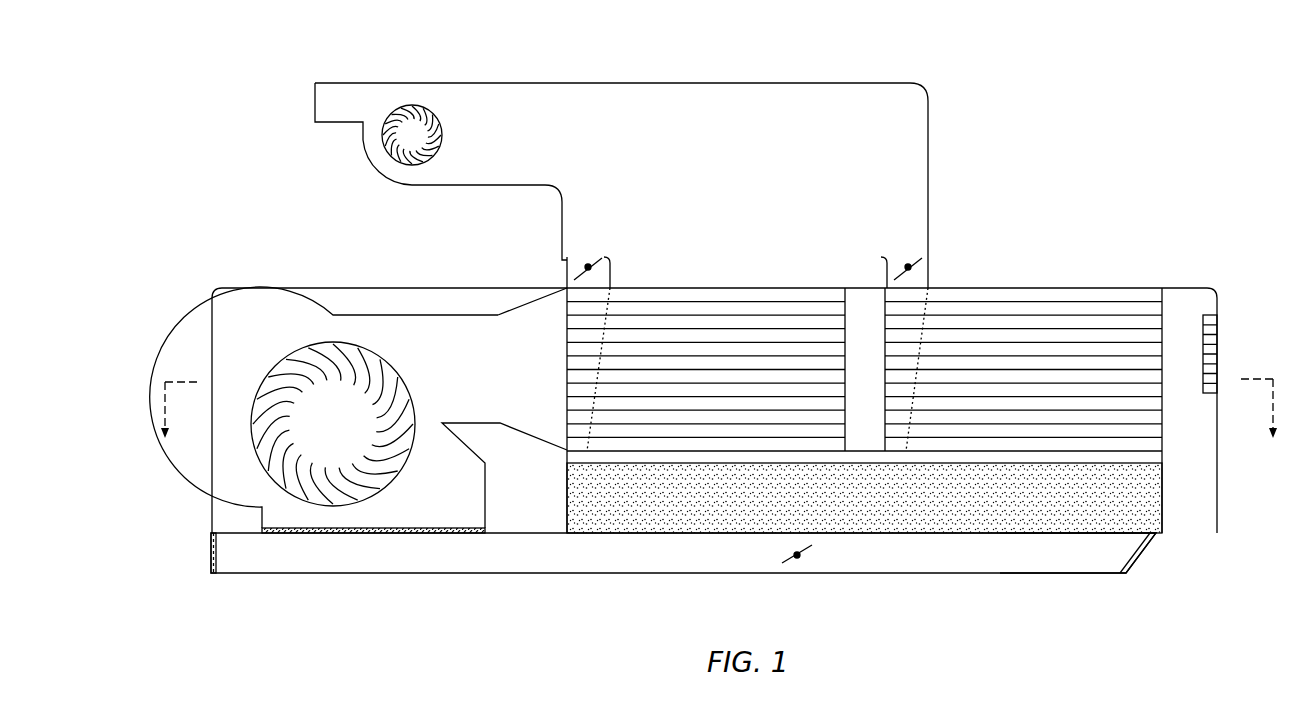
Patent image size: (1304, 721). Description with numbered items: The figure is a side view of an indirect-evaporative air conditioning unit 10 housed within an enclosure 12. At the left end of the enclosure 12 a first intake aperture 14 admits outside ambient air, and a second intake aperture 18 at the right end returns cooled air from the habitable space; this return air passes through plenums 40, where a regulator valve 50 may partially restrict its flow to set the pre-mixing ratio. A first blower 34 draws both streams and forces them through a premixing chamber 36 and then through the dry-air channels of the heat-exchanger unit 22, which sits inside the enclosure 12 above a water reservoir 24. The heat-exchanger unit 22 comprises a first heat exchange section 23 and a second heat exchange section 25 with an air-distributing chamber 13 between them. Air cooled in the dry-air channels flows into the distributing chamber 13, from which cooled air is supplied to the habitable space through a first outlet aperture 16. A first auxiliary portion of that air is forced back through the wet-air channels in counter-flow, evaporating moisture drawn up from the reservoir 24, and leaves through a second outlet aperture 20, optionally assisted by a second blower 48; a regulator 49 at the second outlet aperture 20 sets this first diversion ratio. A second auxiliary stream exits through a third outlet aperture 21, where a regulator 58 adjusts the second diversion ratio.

The air conditioning unit 10 is at (296, 243).
The enclosure 12 is at (390, 286).
The air-distributing chamber 13 is at (864, 296).
The first intake aperture 14 is at (209, 560).
The first outlet aperture 16 is at (1218, 330).
The second intake aperture 18 is at (1135, 553).
The second outlet aperture 20 is at (562, 268).
The third outlet aperture 21 is at (930, 268).
The heat-exchanger unit 22 is at (813, 417).
The first heat exchange section 23 is at (715, 318).
The water reservoir 24 is at (1145, 495).
The second heat exchange section 25 is at (1037, 318).
The first blower 34 is at (319, 435).
The premixing chamber 36 is at (452, 565).
The plenums 40 is at (1102, 567).
The second blower 48 is at (438, 125).
The regulator 49 is at (588, 267).
The regulator valve 50 is at (804, 556).
The regulator 58 is at (908, 267).